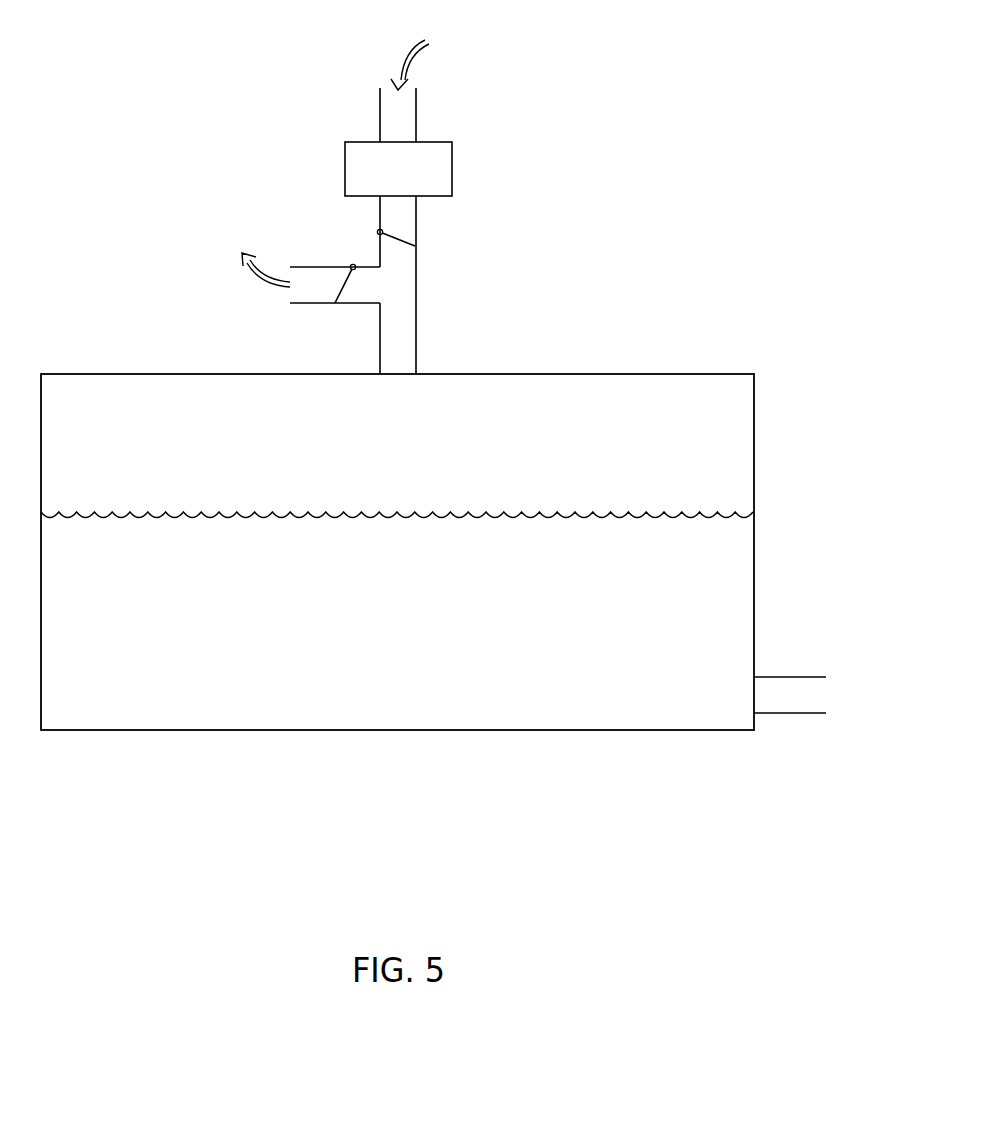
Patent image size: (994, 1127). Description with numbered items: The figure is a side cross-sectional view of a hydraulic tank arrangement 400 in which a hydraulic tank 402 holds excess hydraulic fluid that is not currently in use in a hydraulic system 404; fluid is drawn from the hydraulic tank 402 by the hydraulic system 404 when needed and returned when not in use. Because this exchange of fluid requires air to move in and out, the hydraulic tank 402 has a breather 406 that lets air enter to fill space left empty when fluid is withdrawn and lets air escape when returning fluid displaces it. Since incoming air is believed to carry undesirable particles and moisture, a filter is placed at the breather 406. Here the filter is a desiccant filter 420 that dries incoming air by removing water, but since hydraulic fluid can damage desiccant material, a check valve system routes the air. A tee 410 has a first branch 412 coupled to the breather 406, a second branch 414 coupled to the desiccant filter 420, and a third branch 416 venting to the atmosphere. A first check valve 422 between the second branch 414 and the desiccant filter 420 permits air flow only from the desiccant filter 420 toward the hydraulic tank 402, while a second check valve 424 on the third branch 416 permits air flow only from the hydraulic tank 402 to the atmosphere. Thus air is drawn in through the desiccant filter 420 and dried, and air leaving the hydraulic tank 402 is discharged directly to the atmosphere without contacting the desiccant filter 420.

The hydraulic tank arrangement 400 is at (669, 81).
The hydraulic tank 402 is at (397, 552).
The hydraulic system 404 is at (793, 688).
The breather 406 is at (407, 374).
The tee 410 is at (416, 291).
The first branch 412 is at (380, 352).
The second branch 414 is at (380, 217).
The third branch 416 is at (321, 291).
The desiccant filter 420 is at (398, 169).
The first check valve 422 is at (416, 247).
The second check valve 424 is at (350, 265).